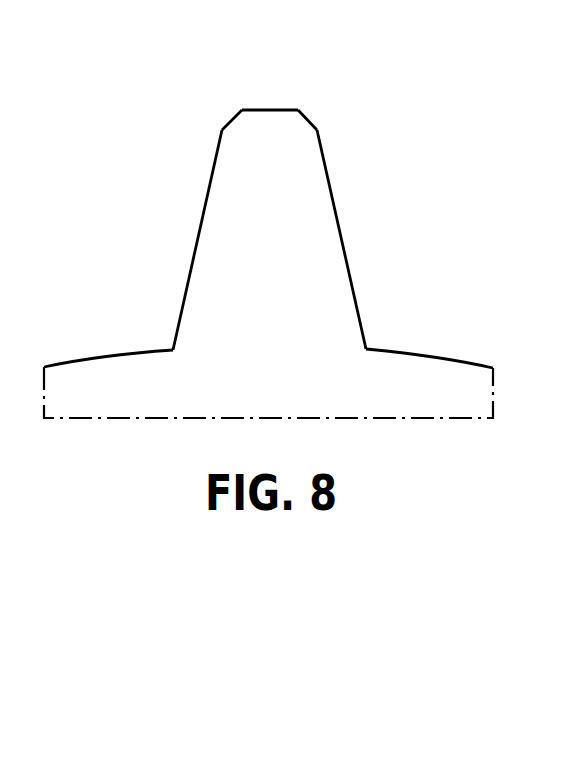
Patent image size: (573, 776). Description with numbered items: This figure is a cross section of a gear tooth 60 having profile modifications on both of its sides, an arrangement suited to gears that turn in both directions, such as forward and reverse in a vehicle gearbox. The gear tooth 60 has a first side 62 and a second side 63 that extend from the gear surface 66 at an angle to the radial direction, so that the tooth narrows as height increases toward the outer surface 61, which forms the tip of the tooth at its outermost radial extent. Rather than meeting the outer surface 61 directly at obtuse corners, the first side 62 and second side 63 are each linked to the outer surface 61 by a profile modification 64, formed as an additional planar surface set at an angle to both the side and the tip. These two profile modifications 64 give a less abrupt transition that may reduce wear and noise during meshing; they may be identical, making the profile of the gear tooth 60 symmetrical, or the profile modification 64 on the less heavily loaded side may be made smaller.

The gear tooth 60 is at (297, 210).
The outer surface 61 is at (262, 110).
The first side 62 is at (350, 268).
The second side 63 is at (187, 281).
The profile modification 64 is at (230, 122).
The gear surface 66 is at (440, 355).